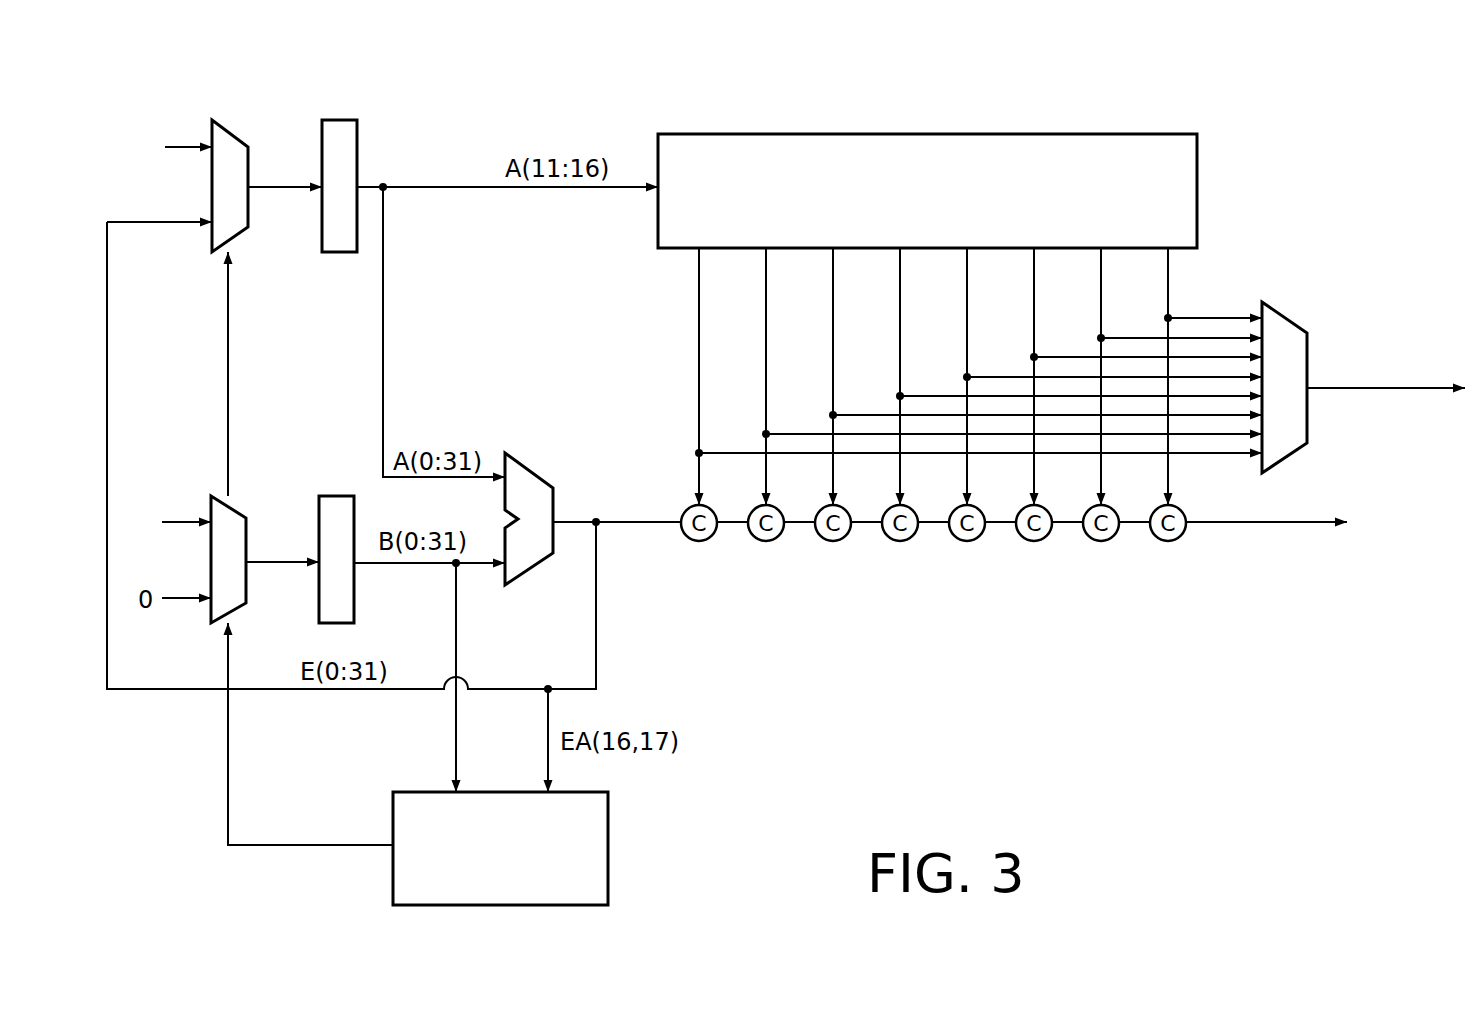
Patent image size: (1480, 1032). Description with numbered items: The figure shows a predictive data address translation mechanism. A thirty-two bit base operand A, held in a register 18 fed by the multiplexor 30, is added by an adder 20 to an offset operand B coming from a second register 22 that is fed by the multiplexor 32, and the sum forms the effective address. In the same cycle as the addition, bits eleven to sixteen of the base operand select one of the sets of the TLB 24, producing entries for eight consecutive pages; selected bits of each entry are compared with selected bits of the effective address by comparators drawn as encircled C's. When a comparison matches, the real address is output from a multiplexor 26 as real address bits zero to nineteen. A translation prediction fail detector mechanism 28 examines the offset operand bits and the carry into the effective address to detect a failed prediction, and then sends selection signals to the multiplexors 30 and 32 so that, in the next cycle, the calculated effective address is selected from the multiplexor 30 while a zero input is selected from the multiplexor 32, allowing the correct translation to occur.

The register A 18 is at (342, 119).
The adder 20 is at (538, 476).
The second register 22 is at (347, 495).
The TLB 24 is at (1087, 133).
The multiplexor 26 is at (1286, 317).
The translation prediction fail detector mechanism 28 is at (608, 850).
The multiplexor 30 is at (232, 121).
The multiplexor 32 is at (240, 513).